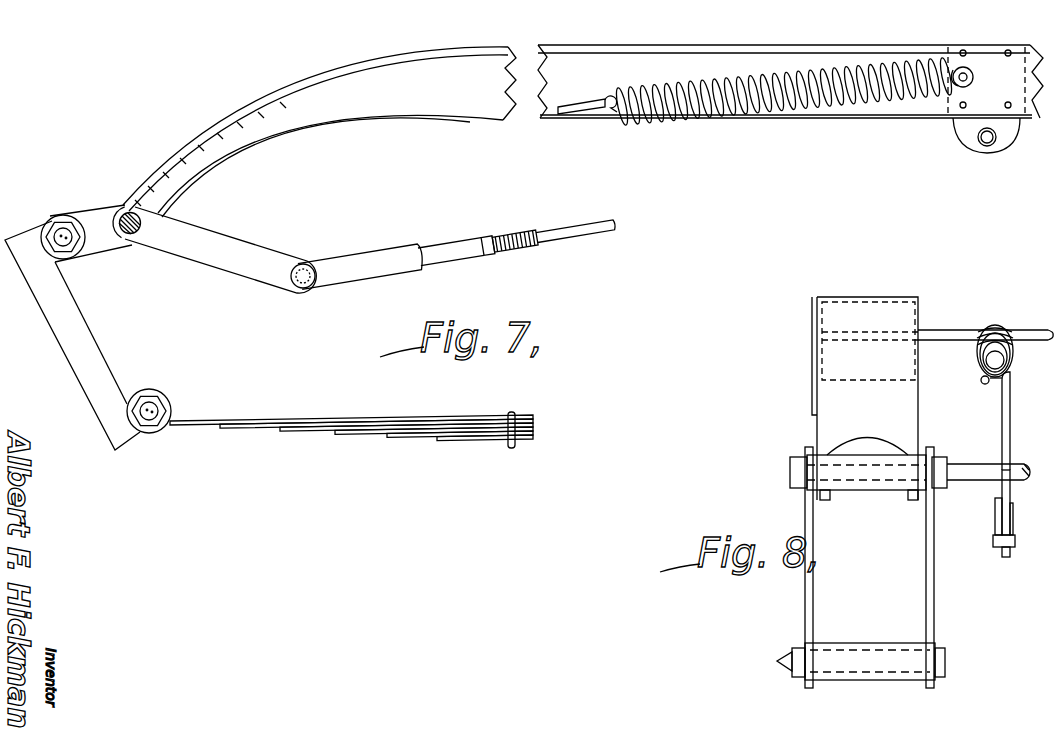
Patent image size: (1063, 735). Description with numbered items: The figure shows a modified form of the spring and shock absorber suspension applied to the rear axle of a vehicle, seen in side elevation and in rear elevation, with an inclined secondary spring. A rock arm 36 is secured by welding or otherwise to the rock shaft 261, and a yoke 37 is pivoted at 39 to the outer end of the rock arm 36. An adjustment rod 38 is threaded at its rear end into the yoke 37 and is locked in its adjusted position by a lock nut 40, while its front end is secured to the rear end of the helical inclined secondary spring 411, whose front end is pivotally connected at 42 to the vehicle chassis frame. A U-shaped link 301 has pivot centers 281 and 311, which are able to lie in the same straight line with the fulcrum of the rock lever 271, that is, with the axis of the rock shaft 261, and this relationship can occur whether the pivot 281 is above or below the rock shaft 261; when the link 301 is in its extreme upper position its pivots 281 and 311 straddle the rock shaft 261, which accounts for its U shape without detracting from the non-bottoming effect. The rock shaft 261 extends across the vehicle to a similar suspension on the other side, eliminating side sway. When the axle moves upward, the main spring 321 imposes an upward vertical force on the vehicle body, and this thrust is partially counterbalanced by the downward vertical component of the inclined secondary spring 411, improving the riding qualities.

In FIG. 7, the rock arm 36 is at (243, 247).
In FIG. 8, the rock arm 36 is at (1012, 490).
In FIG. 7, the yoke 37 is at (358, 262).
In FIG. 8, the yoke 37 is at (1002, 552).
In FIG. 7, the adjustment rod 38 is at (560, 237).
In FIG. 8, the adjustment rod 38 is at (1010, 423).
In FIG. 7, the pivot 39 is at (302, 290).
In FIG. 8, the pivot 39 is at (993, 543).
In FIG. 7, the lock nut 40 is at (485, 238).
In FIG. 8, the lock nut 40 is at (970, 478).
In FIG. 7, the pivotal connection 42 is at (974, 80).
In FIG. 8, the pivotal connection 42 is at (1028, 330).
In FIG. 7, the rock shaft 261 is at (132, 236).
In FIG. 8, the rock shaft 261 is at (998, 500).
In FIG. 7, the rock lever 271 is at (100, 243).
In FIG. 8, the rock lever 271 is at (925, 503).
In FIG. 7, the pivot center 281 is at (55, 228).
In FIG. 8, the pivot center 281 is at (790, 471).
In FIG. 7, the link 301 is at (70, 320).
In FIG. 8, the link 301 is at (928, 578).
In FIG. 7, the pivot center 311 is at (153, 397).
In FIG. 8, the pivot center 311 is at (945, 660).
In FIG. 7, the main spring 321 is at (396, 432).
In FIG. 8, the main spring 321 is at (872, 645).
In FIG. 7, the inclined secondary spring 411 is at (840, 100).
In FIG. 8, the inclined secondary spring 411 is at (995, 326).